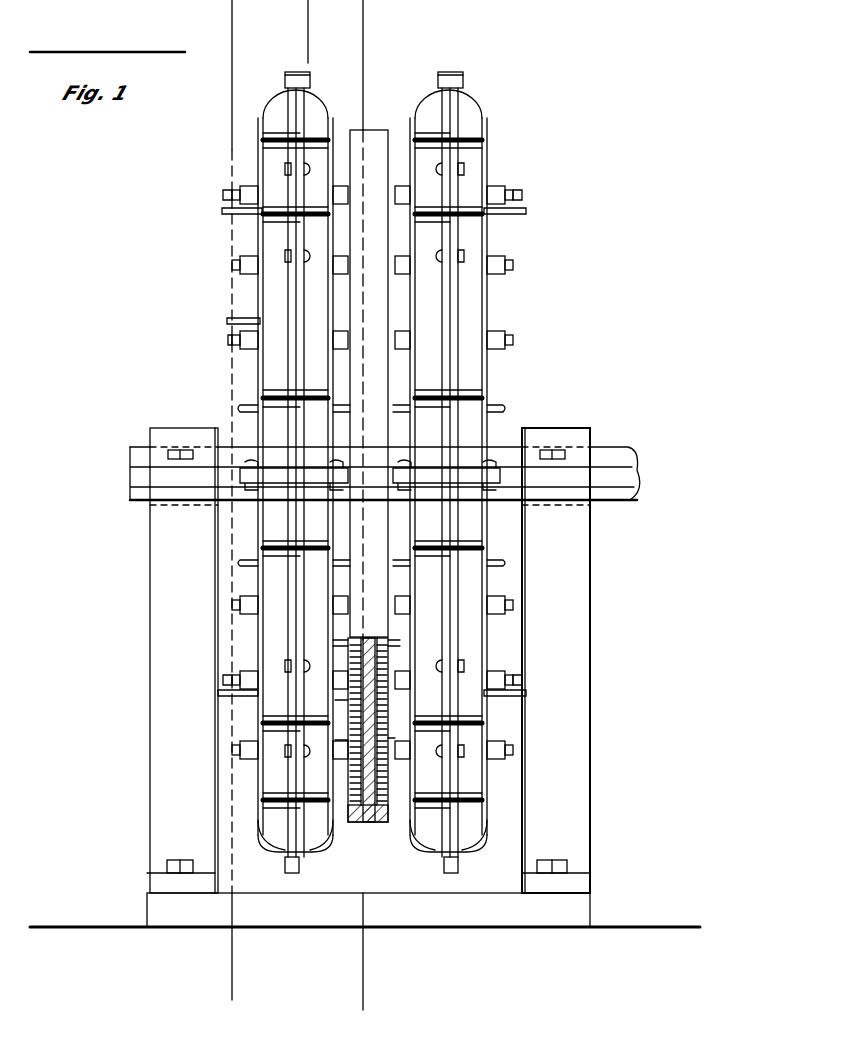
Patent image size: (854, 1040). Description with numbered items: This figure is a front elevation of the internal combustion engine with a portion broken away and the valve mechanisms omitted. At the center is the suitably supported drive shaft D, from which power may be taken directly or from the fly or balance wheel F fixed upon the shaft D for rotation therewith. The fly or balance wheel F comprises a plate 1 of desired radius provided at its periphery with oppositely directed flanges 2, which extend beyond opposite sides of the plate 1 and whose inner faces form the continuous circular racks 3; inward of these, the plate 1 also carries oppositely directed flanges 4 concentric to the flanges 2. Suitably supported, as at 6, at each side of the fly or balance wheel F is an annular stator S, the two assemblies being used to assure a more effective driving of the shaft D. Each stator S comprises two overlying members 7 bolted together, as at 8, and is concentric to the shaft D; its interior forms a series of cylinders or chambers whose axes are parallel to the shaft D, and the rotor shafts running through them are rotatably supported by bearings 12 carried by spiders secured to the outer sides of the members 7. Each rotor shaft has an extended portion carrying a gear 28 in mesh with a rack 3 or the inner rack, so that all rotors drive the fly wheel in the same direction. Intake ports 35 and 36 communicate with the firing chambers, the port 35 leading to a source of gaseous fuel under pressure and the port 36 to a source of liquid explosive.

The plate 1 is at (388, 665).
The oppositely directed flanges 2 is at (325, 37).
The continuous circular rack 3 is at (262, 34).
The oppositely directed flanges 4 is at (283, 15).
The support 6 is at (290, 848).
The overlying members 7 is at (322, 134).
The bolts 8 is at (463, 80).
The bearings 12 is at (505, 198).
The gear 28 is at (355, 765).
The intake port 35 is at (520, 212).
The intake port 36 is at (522, 198).
The annular stator S is at (280, 307).
The fly or balance wheel F is at (372, 140).
The drive shaft D is at (615, 462).